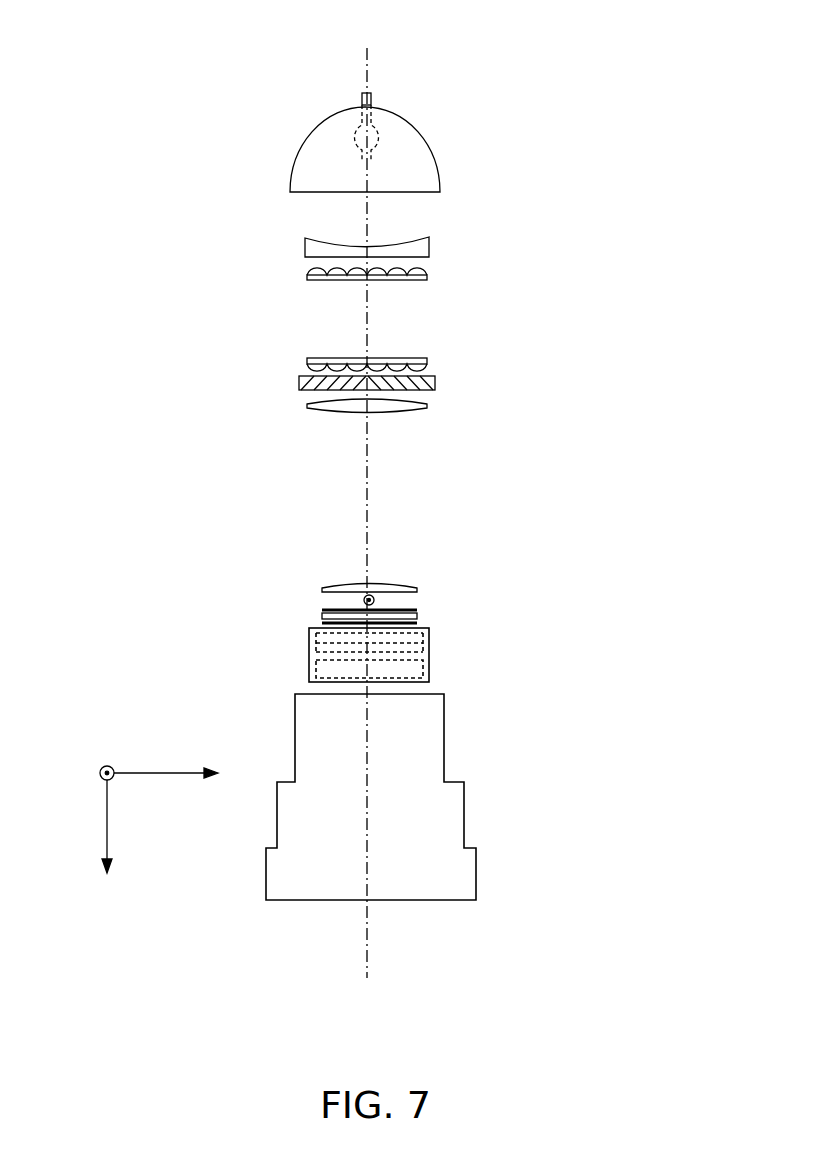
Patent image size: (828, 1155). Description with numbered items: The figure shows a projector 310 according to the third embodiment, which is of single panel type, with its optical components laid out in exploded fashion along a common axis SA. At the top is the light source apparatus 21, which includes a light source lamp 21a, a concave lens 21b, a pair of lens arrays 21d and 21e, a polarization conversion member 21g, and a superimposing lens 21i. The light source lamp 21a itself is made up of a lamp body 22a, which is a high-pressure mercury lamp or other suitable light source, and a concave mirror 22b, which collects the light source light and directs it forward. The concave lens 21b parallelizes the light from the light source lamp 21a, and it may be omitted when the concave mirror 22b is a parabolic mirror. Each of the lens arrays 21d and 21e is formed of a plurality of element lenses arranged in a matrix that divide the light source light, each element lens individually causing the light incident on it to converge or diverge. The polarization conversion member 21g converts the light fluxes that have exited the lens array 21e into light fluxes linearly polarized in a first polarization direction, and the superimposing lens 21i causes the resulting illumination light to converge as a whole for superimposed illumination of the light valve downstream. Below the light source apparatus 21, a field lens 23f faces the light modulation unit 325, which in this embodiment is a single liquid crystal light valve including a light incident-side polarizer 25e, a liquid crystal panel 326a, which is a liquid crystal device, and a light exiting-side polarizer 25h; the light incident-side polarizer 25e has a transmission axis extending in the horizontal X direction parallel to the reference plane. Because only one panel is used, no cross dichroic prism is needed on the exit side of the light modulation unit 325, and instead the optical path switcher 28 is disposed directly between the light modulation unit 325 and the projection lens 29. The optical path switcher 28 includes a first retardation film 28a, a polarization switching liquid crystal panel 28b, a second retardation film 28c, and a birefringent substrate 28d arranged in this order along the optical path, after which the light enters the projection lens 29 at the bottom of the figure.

The projector 310 is at (707, 32).
The system optical axis SA is at (369, 311).
The light source apparatus 21 is at (558, 210).
The light source lamp 21a is at (432, 158).
The concave lens 21b is at (430, 238).
The lens array 21d is at (427, 277).
The lens array 21e is at (427, 358).
The polarization conversion member 21g is at (435, 383).
The superimposing lens 21i is at (427, 406).
The lamp body 22a is at (380, 128).
The concave mirror 22b is at (415, 127).
The light modulation unit 325 is at (500, 568).
The field lens 23f is at (392, 589).
The light incident-side polarizer 25e is at (320, 609).
The light exiting-side polarizer 25h is at (320, 623).
The liquid crystal panel 326a is at (417, 617).
The optical path switcher 28 is at (363, 674).
The first retardation film 28a is at (423, 633).
The polarization switching liquid crystal panel 28b is at (423, 644).
The second retardation film 28c is at (316, 655).
The birefringent substrate 28d is at (316, 677).
The projection lens 29 is at (433, 815).